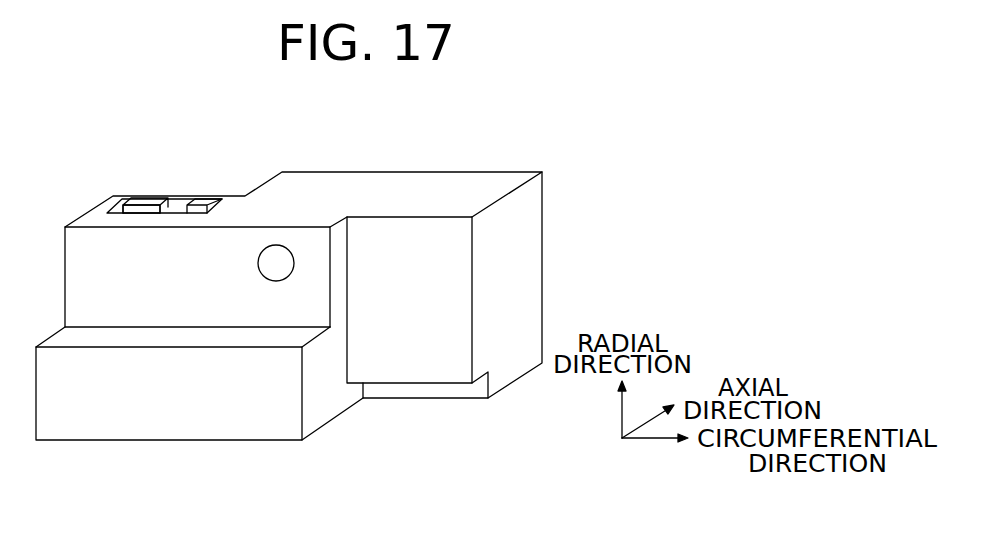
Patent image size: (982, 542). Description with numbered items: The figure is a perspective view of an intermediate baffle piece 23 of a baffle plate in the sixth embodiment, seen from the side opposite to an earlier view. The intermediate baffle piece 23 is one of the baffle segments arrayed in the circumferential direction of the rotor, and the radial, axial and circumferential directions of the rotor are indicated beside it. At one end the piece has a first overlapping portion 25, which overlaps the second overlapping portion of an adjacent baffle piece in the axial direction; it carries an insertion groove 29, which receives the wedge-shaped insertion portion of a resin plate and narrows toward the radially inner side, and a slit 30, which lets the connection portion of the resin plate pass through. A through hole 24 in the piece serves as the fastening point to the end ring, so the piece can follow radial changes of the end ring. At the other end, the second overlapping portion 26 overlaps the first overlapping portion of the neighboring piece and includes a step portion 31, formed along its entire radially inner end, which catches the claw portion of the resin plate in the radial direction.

The intermediate baffle piece 23 is at (318, 190).
The through hole 24 is at (264, 250).
The first overlapping portion 25 is at (145, 197).
The second overlapping portion 26 is at (433, 232).
The insertion groove 29 is at (133, 208).
The slit 30 is at (177, 203).
The step portion 31 is at (490, 392).